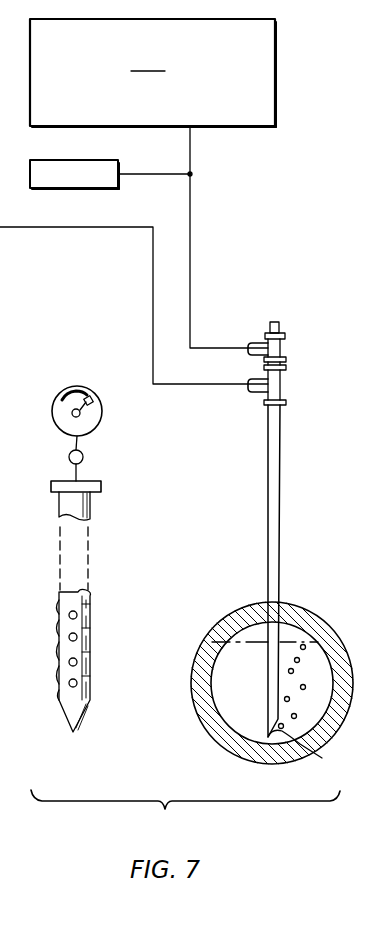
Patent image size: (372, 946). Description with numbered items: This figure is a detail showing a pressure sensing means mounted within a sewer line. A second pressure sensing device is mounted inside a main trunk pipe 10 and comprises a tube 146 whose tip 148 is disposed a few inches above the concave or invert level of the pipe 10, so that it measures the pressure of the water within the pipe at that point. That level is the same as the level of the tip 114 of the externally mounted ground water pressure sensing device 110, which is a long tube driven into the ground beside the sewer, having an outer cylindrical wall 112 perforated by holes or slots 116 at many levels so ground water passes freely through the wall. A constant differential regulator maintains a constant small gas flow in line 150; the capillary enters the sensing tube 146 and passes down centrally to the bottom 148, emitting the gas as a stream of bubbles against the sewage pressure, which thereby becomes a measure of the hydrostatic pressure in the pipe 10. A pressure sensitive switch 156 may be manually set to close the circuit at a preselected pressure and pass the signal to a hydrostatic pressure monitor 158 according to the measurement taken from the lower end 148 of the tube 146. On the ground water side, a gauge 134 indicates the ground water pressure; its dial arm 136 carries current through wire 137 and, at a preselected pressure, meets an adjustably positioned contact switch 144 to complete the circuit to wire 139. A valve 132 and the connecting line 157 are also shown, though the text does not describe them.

The main trunk pipe 10 is at (322, 598).
The ground water pressure sensing device 110 is at (90, 522).
The outer cylindrical wall 112 is at (106, 648).
The tip 114 is at (90, 716).
The holes or slots 116 is at (112, 640).
The valve 132 is at (82, 453).
The gauge 134 is at (50, 411).
The dial arm 136 is at (62, 398).
The wire 137 is at (80, 414).
The wire 139 is at (96, 398).
The contact switch 144 is at (91, 398).
The tube 146 is at (280, 536).
The tip 148 is at (312, 751).
The line 150 is at (200, 386).
The pressure sensitive switch 156 is at (108, 160).
The connecting line 157 is at (190, 268).
The hydrostatic pressure monitor 158 is at (276, 47).